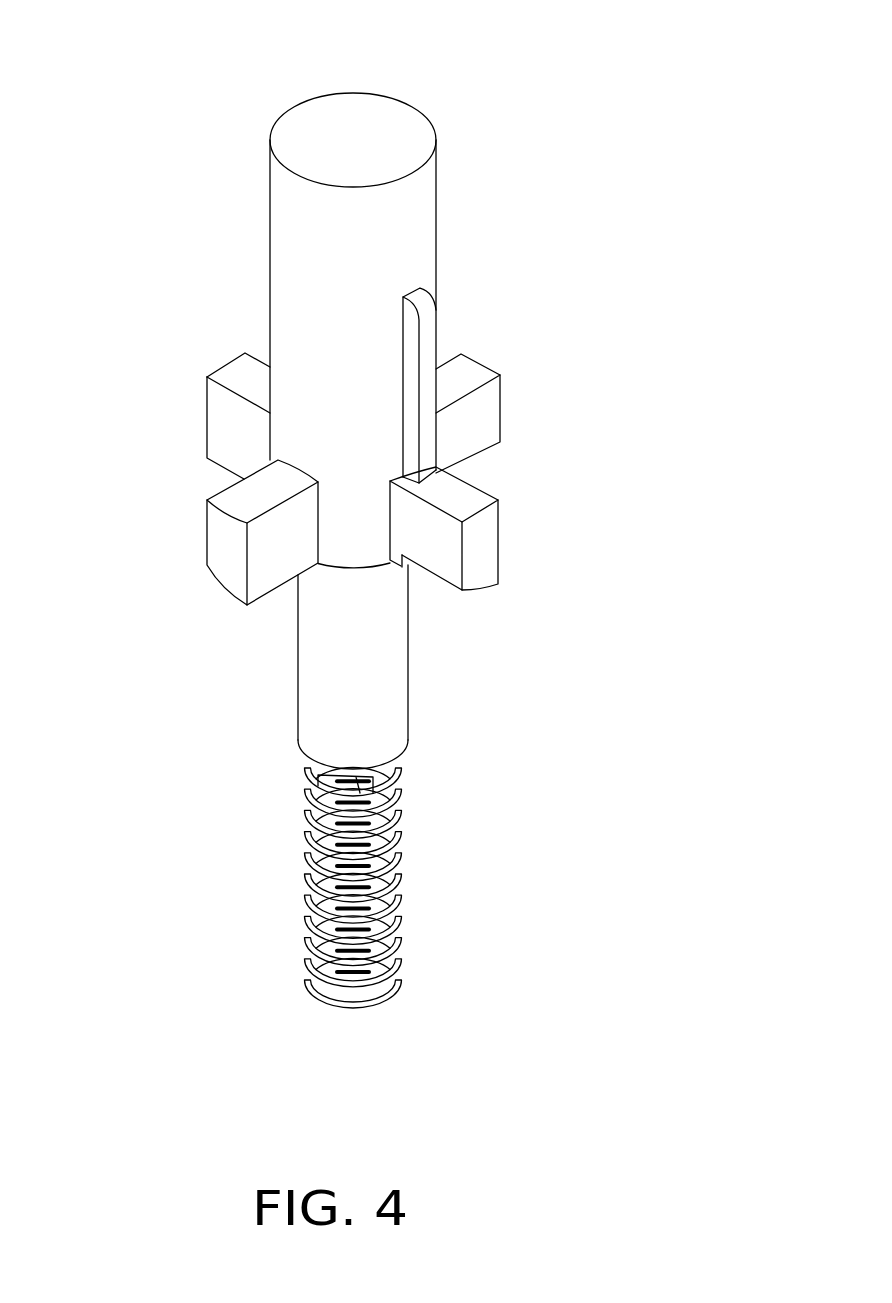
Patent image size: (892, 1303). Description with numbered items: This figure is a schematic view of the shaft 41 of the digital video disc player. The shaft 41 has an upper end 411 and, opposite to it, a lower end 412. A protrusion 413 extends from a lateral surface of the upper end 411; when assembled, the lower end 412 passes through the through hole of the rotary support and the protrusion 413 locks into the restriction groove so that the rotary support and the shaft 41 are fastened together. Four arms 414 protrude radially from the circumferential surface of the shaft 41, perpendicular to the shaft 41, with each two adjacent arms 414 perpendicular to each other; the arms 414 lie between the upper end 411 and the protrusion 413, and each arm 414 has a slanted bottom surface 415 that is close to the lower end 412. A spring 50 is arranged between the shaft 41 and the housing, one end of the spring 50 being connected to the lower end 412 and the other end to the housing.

The shaft 41 is at (153, 73).
The upper end 411 is at (370, 137).
The lower end 412 is at (373, 712).
The protrusion 413 is at (425, 318).
The arm 414 is at (473, 376).
The slanted bottom surface 415 is at (490, 590).
The spring 50 is at (393, 882).